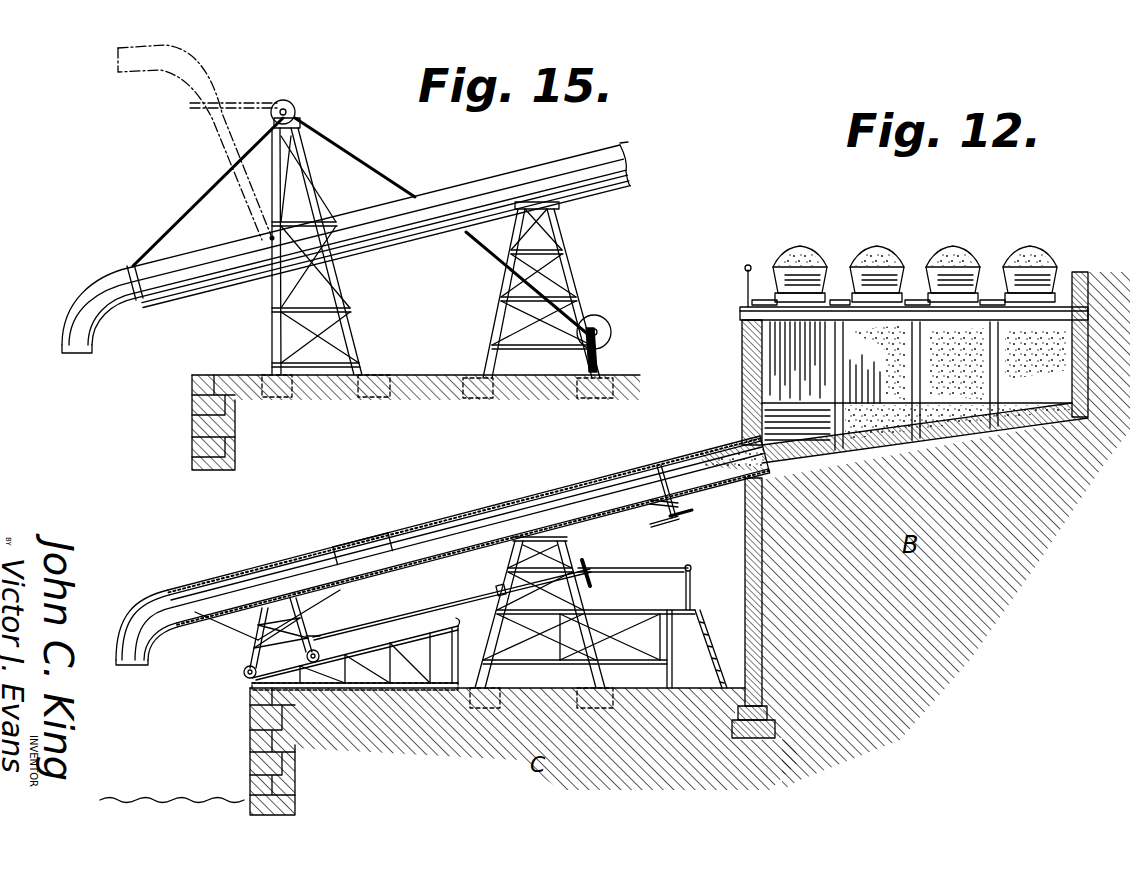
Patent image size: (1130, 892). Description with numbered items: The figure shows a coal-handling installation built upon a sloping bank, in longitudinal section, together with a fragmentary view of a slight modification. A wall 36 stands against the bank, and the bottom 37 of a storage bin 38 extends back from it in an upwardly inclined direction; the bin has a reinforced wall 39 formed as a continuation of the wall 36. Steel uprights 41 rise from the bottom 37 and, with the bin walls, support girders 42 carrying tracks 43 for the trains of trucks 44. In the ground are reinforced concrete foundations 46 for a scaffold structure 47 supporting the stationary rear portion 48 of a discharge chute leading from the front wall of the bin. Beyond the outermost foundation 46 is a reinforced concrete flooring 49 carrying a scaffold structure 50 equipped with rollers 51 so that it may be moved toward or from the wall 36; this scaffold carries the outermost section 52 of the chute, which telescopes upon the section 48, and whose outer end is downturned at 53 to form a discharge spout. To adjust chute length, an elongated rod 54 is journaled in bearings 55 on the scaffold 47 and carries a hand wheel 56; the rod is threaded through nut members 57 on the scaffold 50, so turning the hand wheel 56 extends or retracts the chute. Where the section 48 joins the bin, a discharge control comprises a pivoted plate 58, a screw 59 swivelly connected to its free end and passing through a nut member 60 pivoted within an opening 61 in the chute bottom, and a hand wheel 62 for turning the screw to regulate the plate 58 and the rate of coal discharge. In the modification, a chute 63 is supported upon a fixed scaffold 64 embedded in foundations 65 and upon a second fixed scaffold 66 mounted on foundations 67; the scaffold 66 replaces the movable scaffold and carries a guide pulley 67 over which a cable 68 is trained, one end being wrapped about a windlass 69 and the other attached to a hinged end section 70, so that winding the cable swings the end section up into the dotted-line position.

In FIG. 12, the wall 36 is at (752, 592).
In FIG. 12, the bottom 37 is at (958, 440).
In FIG. 12, the storage bin 38 is at (877, 386).
In FIG. 12, the reinforced wall 39 is at (745, 352).
In FIG. 12, the steel uprights 41 is at (999, 384).
In FIG. 12, the girders 42 is at (940, 318).
In FIG. 12, the tracks 43 is at (826, 290).
In FIG. 12, the trucks 44 is at (905, 290).
In FIG. 12, the reinforced concrete foundations 46 is at (480, 700).
In FIG. 12, the scaffold structure 47 is at (570, 535).
In FIG. 12, the stationary rear portion 48 is at (492, 515).
In FIG. 12, the reinforced concrete flooring 49 is at (380, 693).
In FIG. 12, the scaffold structure 50 is at (250, 652).
In FIG. 12, the rollers 51 is at (242, 680).
In FIG. 12, the outermost section 52 is at (280, 562).
In FIG. 12, the downturned end 53 is at (152, 662).
In FIG. 12, the elongated rod 54 is at (448, 604).
In FIG. 12, the bearings 55 is at (500, 592).
In FIG. 12, the hand wheel 56 is at (592, 581).
In FIG. 12, the nut members 57 is at (322, 636).
In FIG. 12, the pivoted plate 58 is at (713, 448).
In FIG. 12, the screw 59 is at (652, 487).
In FIG. 12, the nut member 60 is at (662, 517).
In FIG. 12, the opening 61 is at (680, 505).
In FIG. 12, the hand wheel 62 is at (683, 518).
In FIG. 15, the chute 63 is at (541, 176).
In FIG. 15, the fixed scaffold 64 is at (578, 272).
In FIG. 15, the foundations 65 is at (478, 398).
In FIG. 15, the second fixed scaffold 66 is at (352, 300).
In FIG. 15, the guide pulley 67 is at (298, 112).
In FIG. 15, the cable 68 is at (372, 168).
In FIG. 15, the windlass 69 is at (611, 332).
In FIG. 15, the hinged end section 70 is at (165, 300).